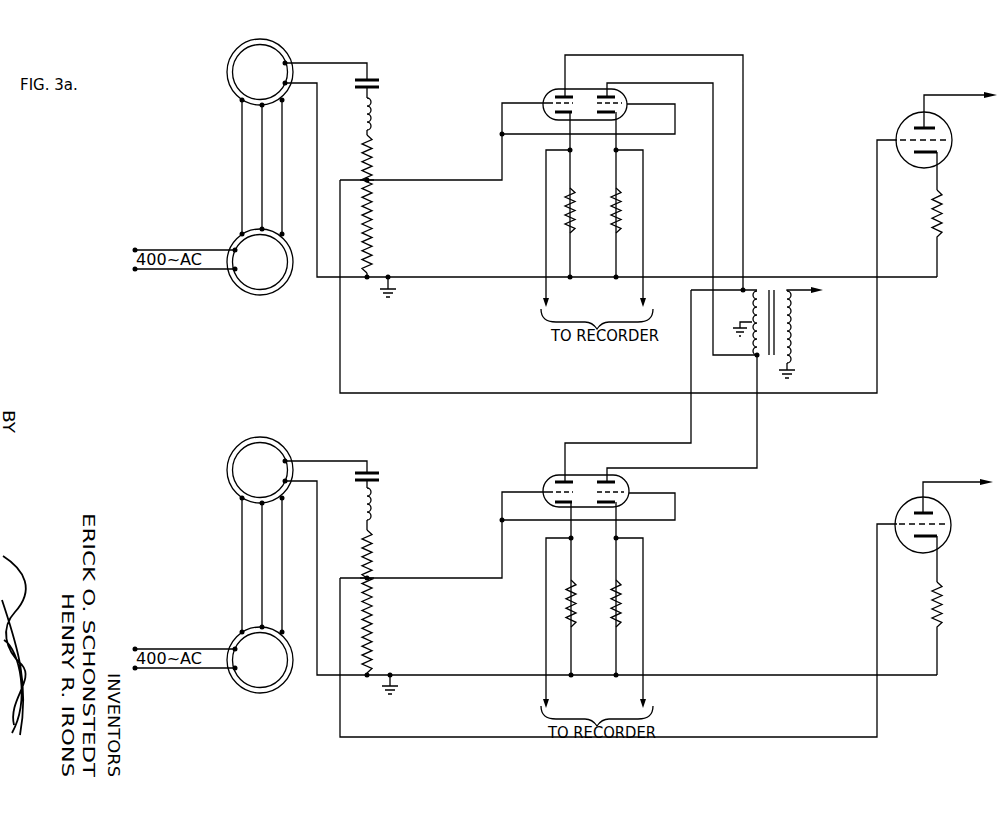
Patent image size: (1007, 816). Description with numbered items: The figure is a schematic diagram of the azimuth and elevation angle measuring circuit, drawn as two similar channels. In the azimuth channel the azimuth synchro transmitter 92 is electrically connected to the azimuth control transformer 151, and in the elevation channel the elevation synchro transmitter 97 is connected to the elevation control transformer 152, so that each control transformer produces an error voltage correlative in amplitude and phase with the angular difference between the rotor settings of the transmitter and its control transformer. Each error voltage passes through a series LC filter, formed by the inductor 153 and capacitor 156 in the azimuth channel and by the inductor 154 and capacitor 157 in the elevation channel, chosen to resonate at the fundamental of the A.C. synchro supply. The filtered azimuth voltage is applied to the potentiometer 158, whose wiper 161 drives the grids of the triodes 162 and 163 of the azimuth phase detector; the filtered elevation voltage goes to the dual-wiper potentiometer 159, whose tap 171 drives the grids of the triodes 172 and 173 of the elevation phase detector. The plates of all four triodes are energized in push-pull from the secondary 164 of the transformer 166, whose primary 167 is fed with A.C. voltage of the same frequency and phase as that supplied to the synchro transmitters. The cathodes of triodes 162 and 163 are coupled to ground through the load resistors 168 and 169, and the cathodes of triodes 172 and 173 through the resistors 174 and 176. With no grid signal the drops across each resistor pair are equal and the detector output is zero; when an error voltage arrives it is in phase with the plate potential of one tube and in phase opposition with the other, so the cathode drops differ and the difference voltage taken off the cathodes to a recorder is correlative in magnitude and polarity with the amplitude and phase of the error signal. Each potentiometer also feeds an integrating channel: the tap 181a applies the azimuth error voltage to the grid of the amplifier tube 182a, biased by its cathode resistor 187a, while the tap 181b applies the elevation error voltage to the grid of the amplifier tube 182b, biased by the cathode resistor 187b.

The azimuth control transformer 151 is at (266, 52).
The azimuth synchro transmitter 92 is at (277, 279).
The capacitor 156 is at (380, 83).
The inductor 153 is at (374, 125).
The potentiometer 158 is at (372, 162).
The wiper 161 is at (370, 185).
The tap 181a is at (362, 180).
The triode 162 is at (550, 90).
The triode 163 is at (625, 101).
The load resistor 168 is at (570, 222).
The load resistor 169 is at (616, 207).
The transformer 166 is at (770, 290).
The secondary 164 is at (752, 306).
The primary 167 is at (795, 325).
The amplifier tube 182a is at (940, 124).
The cathode resistor 187a is at (941, 212).
The elevation control transformer 152 is at (263, 449).
The elevation synchro transmitter 97 is at (275, 676).
The capacitor 157 is at (372, 473).
The inductor 154 is at (372, 522).
The potentiometer 159 is at (370, 552).
The tap 171 is at (370, 583).
The tap 181b is at (362, 576).
The triode 172 is at (553, 475).
The triode 173 is at (630, 485).
The resistor 174 is at (571, 615).
The resistor 176 is at (616, 592).
The amplifier tube 182b is at (940, 518).
The cathode resistor 187b is at (942, 603).